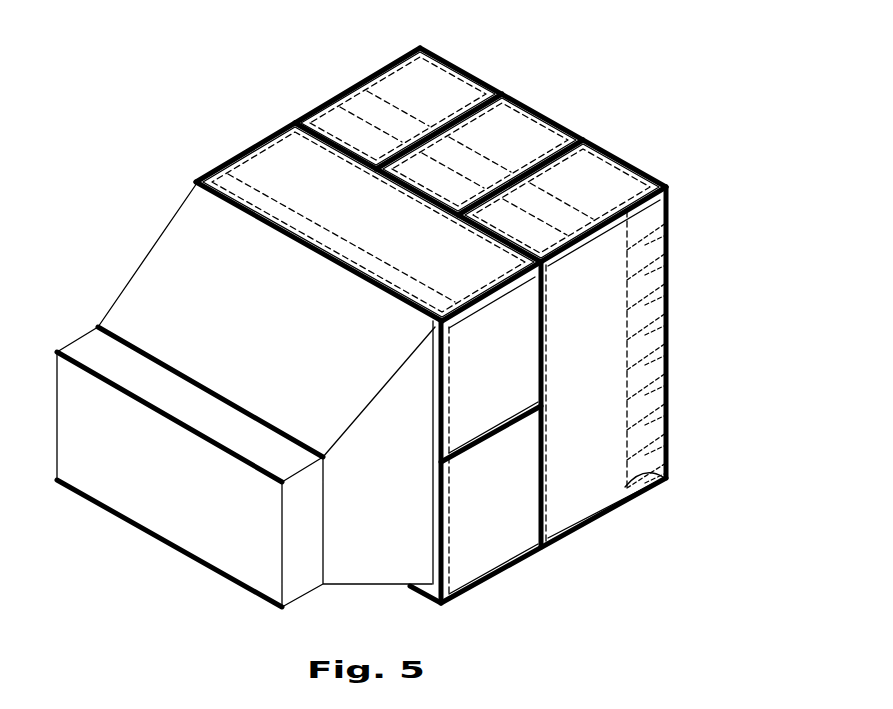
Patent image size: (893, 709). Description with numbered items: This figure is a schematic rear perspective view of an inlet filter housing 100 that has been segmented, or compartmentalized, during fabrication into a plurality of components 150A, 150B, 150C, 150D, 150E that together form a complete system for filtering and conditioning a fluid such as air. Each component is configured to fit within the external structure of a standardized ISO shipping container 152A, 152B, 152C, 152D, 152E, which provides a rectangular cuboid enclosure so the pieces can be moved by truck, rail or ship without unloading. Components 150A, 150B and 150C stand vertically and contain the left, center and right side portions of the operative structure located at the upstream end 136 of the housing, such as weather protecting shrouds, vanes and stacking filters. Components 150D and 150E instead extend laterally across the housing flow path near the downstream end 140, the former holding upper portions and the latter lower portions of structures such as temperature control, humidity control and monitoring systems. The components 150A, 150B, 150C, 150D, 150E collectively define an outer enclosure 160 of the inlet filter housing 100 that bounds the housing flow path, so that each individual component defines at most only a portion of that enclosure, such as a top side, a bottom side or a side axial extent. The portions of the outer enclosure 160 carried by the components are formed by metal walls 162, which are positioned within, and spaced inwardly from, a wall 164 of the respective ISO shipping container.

The inlet filter housing 100 is at (552, 62).
The upstream end 136 is at (670, 358).
The downstream end 140 is at (253, 553).
The component 150A is at (600, 410).
The component 150B is at (507, 160).
The component 150C is at (373, 117).
The component 150D is at (258, 182).
The component 150E is at (468, 540).
The ISO shipping container 152A is at (672, 237).
The ISO shipping container 152B is at (530, 112).
The ISO shipping container 152C is at (330, 100).
The ISO shipping container 152D is at (240, 150).
The ISO shipping container 152E is at (512, 568).
The outer enclosure 160 is at (660, 483).
The metal walls 162 is at (590, 297).
The wall 164 is at (578, 473).